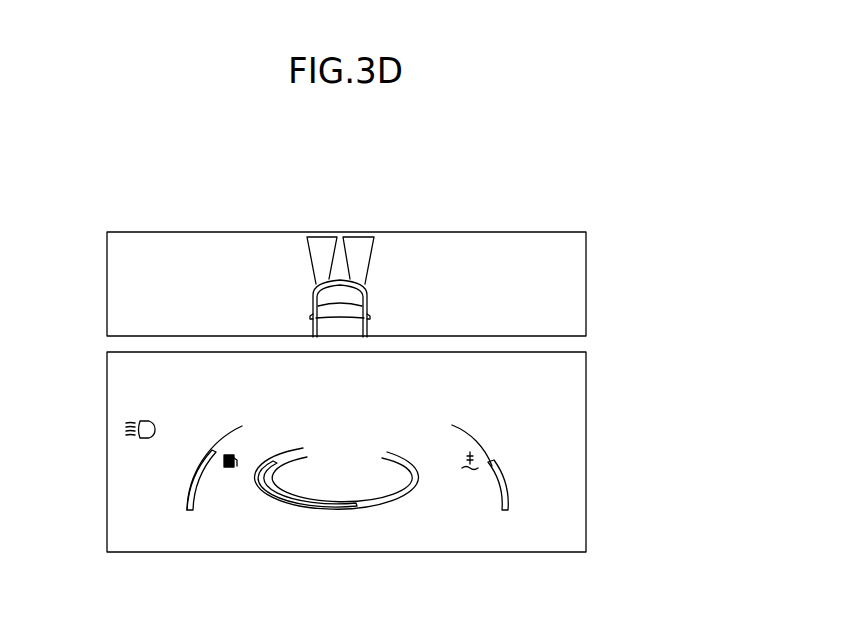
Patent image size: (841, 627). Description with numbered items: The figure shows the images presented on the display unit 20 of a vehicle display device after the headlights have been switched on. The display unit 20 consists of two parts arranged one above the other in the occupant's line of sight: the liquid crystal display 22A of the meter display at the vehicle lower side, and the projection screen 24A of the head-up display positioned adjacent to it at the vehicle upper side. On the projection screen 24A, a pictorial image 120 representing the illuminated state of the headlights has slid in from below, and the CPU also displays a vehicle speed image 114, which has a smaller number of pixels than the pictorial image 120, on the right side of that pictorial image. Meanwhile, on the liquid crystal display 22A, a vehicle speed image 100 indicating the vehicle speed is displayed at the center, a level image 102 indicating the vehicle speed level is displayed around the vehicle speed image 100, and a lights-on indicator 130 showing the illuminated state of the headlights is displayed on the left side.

The display unit 20 is at (636, 253).
The projection screen 24A is at (586, 297).
The liquid crystal display 22A is at (586, 465).
The vehicle speed image 114 is at (425, 262).
The pictorial image 120 is at (316, 262).
The vehicle speed image 100 is at (317, 413).
The level image 102 is at (283, 497).
The lights-on indicator 130 is at (145, 440).